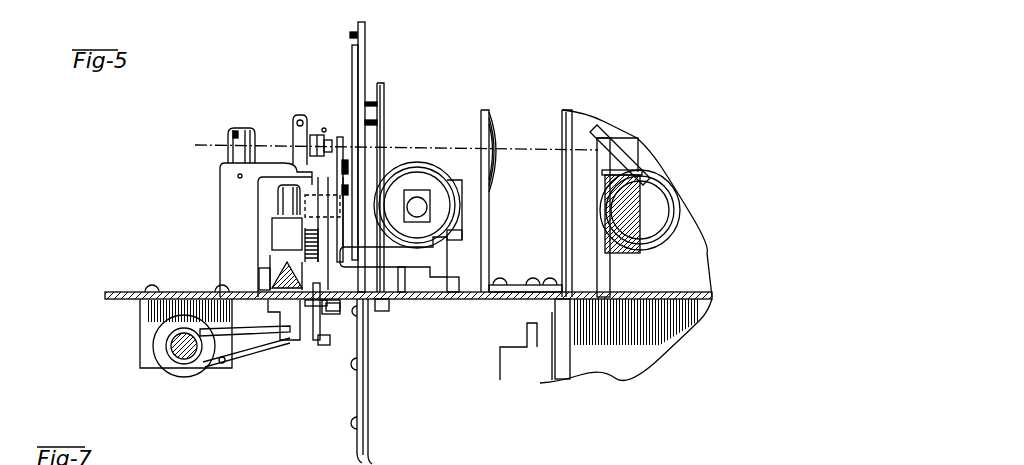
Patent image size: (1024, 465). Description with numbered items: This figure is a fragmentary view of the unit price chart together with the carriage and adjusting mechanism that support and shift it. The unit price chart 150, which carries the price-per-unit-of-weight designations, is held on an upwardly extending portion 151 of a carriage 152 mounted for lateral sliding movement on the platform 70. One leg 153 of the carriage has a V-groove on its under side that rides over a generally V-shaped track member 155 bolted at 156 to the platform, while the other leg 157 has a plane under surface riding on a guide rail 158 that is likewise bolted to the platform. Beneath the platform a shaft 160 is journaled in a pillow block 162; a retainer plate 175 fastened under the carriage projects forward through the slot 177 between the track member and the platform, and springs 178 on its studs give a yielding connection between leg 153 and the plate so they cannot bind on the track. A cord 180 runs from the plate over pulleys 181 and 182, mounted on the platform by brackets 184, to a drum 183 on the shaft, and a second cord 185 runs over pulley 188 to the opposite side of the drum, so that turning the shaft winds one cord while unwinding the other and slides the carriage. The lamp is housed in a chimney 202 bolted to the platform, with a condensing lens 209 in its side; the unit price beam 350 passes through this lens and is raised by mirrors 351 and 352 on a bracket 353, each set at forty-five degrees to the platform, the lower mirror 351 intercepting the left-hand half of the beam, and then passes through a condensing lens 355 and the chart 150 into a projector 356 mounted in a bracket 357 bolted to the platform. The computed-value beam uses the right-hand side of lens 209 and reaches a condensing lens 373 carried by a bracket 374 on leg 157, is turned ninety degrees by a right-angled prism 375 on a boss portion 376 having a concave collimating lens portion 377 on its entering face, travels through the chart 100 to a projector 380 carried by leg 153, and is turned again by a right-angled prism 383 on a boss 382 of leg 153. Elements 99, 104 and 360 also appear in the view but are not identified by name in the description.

The platform 70 is at (120, 293).
The vertical bar 99 is at (364, 47).
The chart 100 is at (355, 62).
The lower strip 104 is at (358, 407).
The unit price chart 150 is at (338, 132).
The upwardly extending portion 151 is at (310, 140).
The carriage 152 is at (402, 290).
The leg of carriage 153 is at (262, 250).
The track member 155 is at (275, 270).
The bolt 156 is at (258, 272).
The leg of carriage 157 is at (430, 257).
The guide rail 158 is at (458, 291).
The shaft 160 is at (188, 355).
The pillow block 162 is at (140, 347).
The retainer plate 175 is at (381, 311).
The slot 177 is at (334, 311).
The springs 178 is at (295, 240).
The cord 180 is at (246, 336).
The pulley 181 is at (312, 340).
The pulley 182 is at (314, 346).
The drum 183 is at (170, 368).
The brackets 184 is at (282, 318).
The cord 185 is at (222, 362).
The pulley 188 is at (275, 342).
The chimney 202 is at (642, 343).
The condensing lens 209 is at (676, 208).
The light beam 350 is at (541, 148).
The mirror 351 is at (641, 257).
The mirror 352 is at (598, 128).
The bracket 353 is at (608, 265).
The condensing lens 355 is at (496, 156).
The projector 356 is at (322, 128).
The bracket 357 is at (233, 182).
The roller 360 is at (228, 141).
The condensing lens 373 is at (415, 170).
The bracket 374 is at (462, 182).
The right-angled prism 375 is at (432, 188).
The boss portion 376 is at (458, 235).
The collimating lens portion 377 is at (409, 163).
The projector 380 is at (293, 158).
The boss 382 is at (278, 213).
The right-angled prism 383 is at (238, 175).